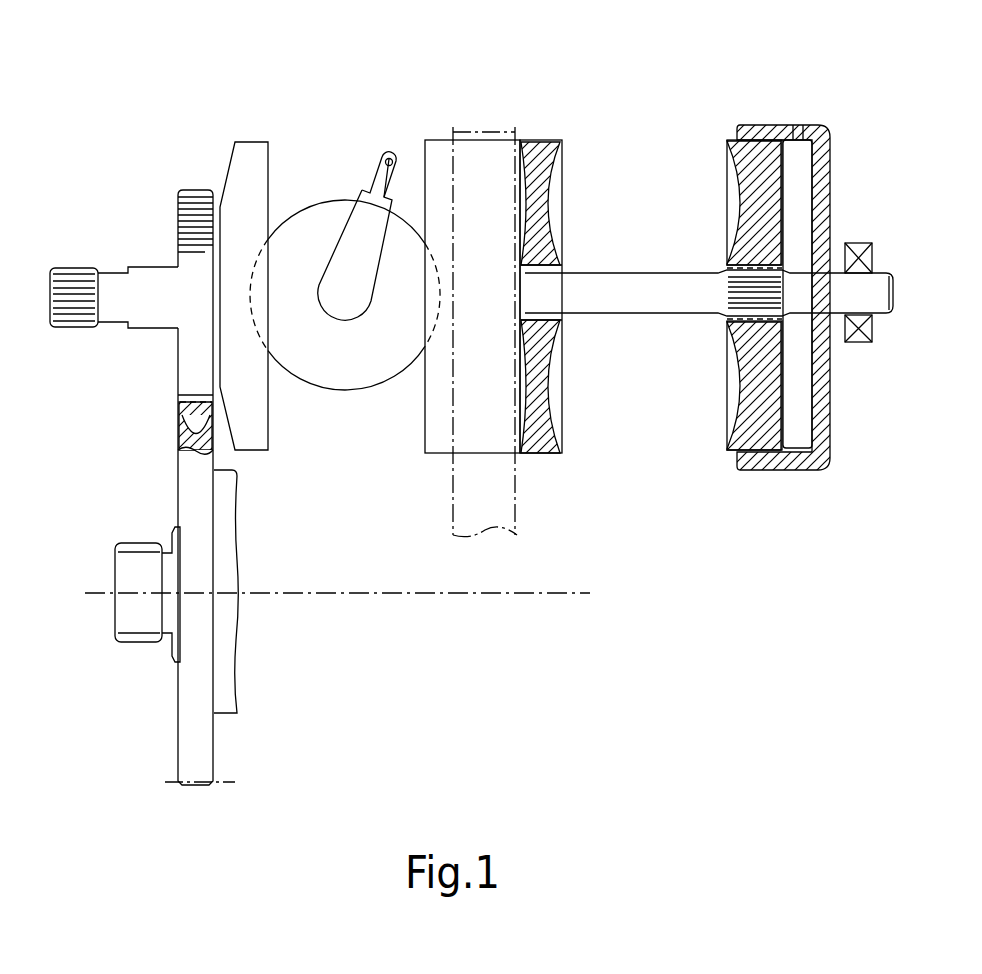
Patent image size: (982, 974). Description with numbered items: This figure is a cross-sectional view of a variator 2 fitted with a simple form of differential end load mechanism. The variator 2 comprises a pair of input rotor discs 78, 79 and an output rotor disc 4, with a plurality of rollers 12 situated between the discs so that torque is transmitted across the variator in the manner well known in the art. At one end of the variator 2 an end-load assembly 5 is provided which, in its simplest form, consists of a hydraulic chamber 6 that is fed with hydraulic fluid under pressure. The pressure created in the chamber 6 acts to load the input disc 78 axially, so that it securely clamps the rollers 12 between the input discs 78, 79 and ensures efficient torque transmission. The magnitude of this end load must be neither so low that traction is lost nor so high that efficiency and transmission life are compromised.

The variator 2 is at (452, 90).
The output rotor disc 4 is at (425, 403).
The end-load assembly 5 is at (822, 170).
The hydraulic chamber 6 is at (803, 210).
The rollers 12 is at (329, 208).
The input rotor disc 78 is at (726, 154).
The input rotor disc 79 is at (268, 162).